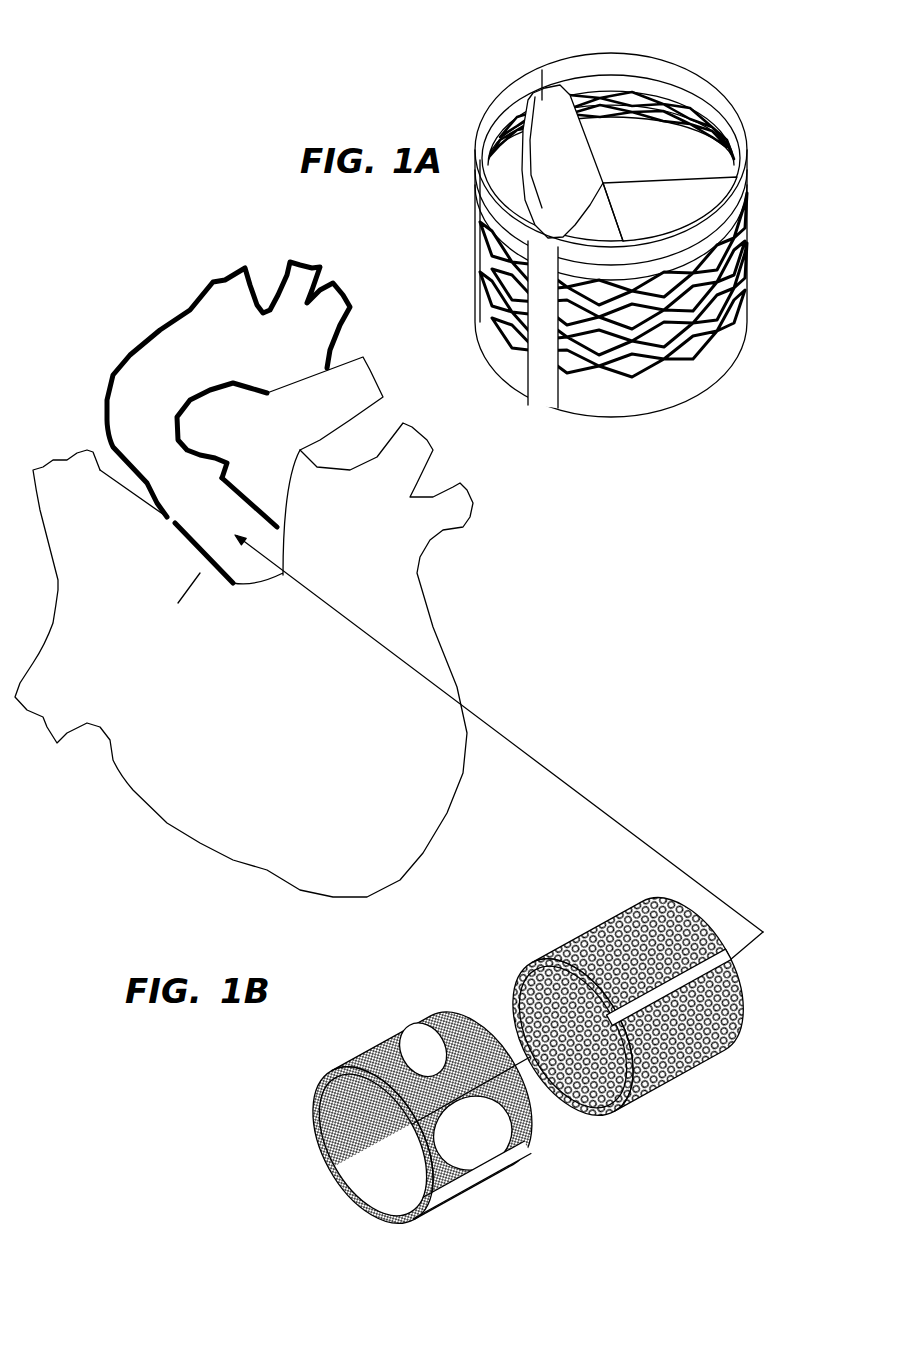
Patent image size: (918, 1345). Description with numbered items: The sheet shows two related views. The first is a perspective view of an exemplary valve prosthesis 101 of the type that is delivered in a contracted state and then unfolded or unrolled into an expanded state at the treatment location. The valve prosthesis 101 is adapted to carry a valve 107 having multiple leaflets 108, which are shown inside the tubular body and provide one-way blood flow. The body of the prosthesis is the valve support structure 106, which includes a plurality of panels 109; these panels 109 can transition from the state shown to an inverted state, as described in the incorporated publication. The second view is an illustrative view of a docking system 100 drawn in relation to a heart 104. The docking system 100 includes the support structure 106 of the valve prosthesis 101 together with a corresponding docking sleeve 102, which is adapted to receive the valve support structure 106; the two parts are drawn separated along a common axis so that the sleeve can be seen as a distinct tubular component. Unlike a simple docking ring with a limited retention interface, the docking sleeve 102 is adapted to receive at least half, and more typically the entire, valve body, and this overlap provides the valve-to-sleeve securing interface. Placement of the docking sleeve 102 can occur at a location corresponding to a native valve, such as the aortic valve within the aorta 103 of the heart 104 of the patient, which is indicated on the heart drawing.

In FIG. 1B, the docking system 100 is at (478, 1060).
In FIG. 1A, the valve prosthesis 101 is at (611, 249).
In FIG. 1B, the valve prosthesis 101 is at (390, 1117).
In FIG. 1B, the docking sleeve 102 is at (668, 1096).
In FIG. 1B, the aorta 103 is at (212, 568).
In FIG. 1B, the heart 104 is at (389, 597).
In FIG. 1A, the valve support structure 106 is at (538, 408).
In FIG. 1B, the valve support structure 106 is at (469, 1179).
In FIG. 1A, the valve 107 is at (645, 206).
In FIG. 1A, the leaflets 108 is at (550, 135).
In FIG. 1A, the panels 109 is at (607, 249).